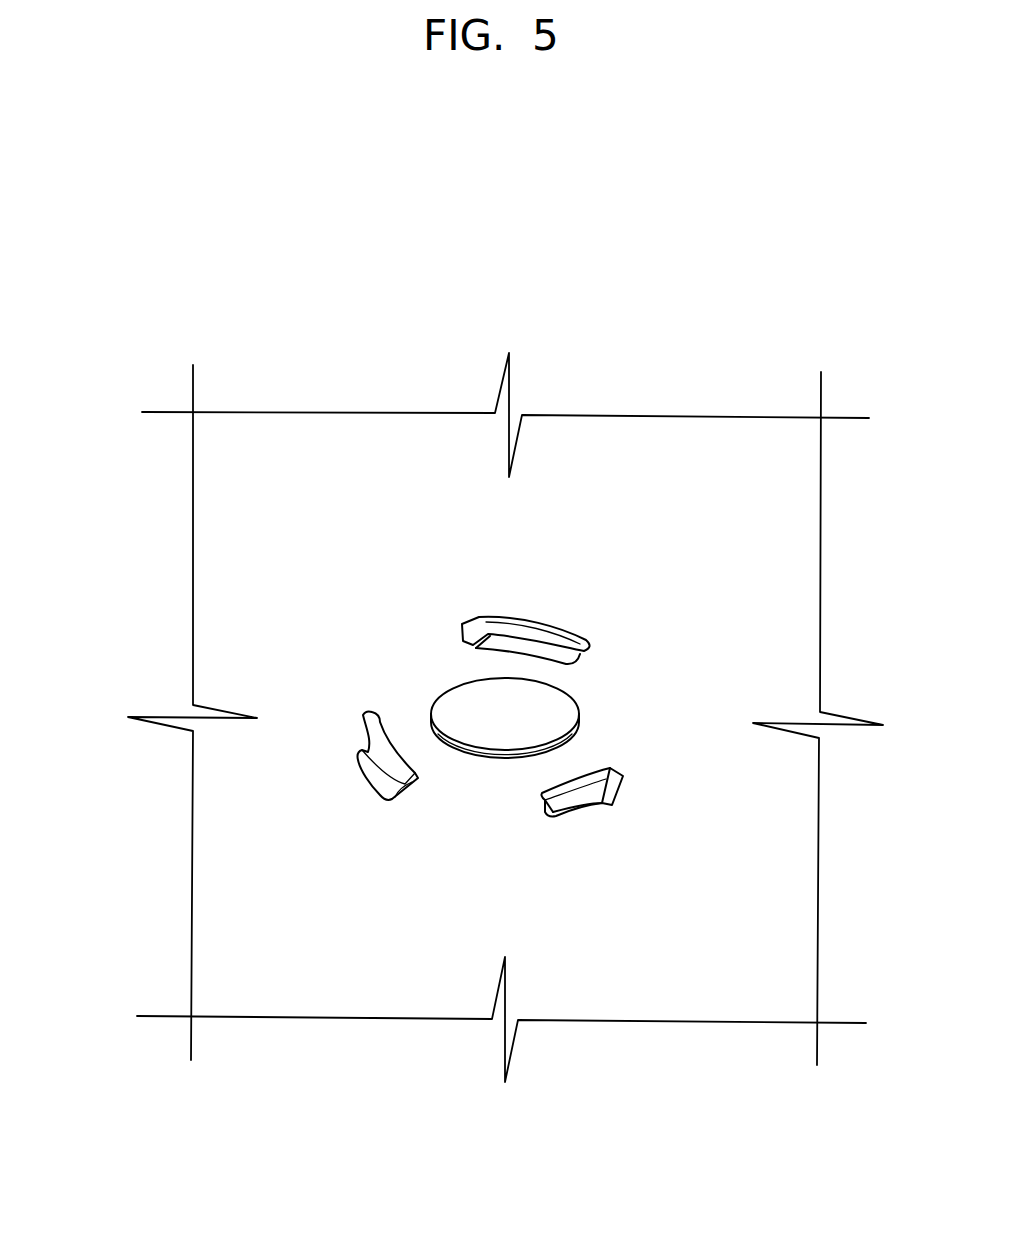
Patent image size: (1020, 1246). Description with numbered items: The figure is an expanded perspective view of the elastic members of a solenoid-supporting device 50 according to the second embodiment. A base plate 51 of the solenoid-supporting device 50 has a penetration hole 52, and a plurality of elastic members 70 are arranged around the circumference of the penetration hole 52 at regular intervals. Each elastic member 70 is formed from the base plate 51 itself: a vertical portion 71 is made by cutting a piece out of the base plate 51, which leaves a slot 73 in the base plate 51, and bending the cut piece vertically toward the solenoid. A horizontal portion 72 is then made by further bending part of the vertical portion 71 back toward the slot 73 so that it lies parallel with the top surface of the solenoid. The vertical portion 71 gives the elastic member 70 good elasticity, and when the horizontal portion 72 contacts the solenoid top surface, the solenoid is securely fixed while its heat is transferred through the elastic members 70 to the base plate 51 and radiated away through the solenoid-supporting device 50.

The solenoid-supporting device 50 is at (673, 413).
The base plate 51 is at (760, 512).
The penetration hole 52 is at (533, 722).
The elastic member 70 is at (95, 573).
The vertical portion 71 is at (462, 628).
The horizontal portion 72 is at (500, 651).
The slot 73 is at (582, 629).